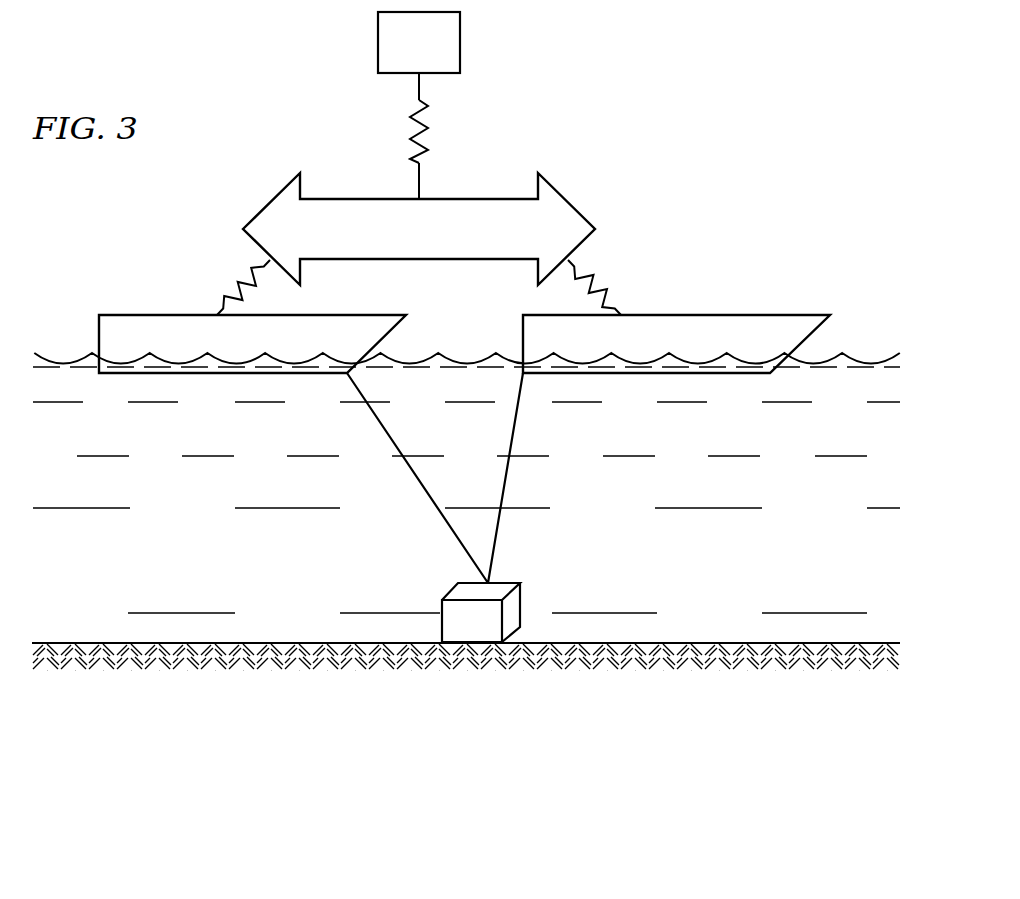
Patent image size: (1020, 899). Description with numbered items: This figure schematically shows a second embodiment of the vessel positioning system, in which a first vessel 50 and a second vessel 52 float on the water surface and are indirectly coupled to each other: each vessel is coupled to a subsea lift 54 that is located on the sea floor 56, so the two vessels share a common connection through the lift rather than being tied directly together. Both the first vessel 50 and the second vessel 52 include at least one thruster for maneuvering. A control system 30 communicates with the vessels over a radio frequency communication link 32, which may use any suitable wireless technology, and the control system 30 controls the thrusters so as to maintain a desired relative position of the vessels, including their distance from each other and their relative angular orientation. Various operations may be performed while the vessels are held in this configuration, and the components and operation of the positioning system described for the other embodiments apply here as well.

The control system 30 is at (405, 53).
The radio frequency communication link 32 is at (432, 245).
The first vessel 50 is at (779, 311).
The second vessel 52 is at (118, 311).
The subsea lift 54 is at (525, 597).
The sea floor 56 is at (279, 638).